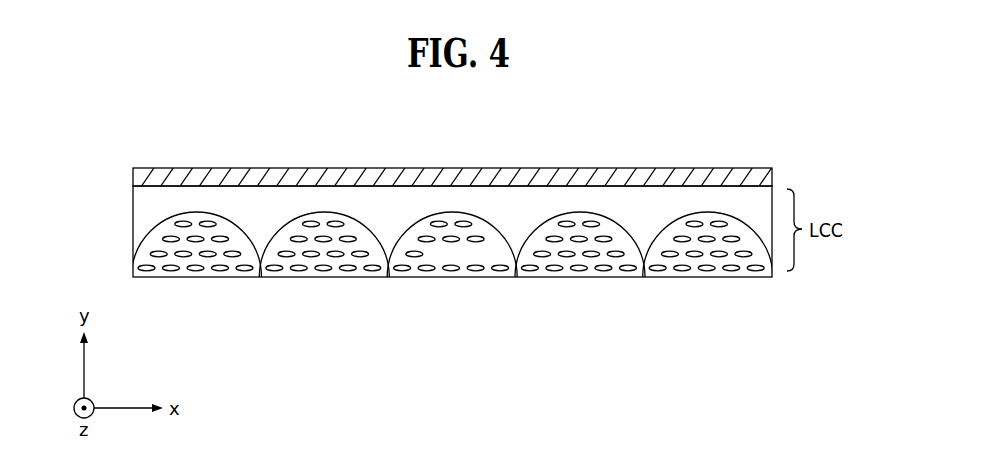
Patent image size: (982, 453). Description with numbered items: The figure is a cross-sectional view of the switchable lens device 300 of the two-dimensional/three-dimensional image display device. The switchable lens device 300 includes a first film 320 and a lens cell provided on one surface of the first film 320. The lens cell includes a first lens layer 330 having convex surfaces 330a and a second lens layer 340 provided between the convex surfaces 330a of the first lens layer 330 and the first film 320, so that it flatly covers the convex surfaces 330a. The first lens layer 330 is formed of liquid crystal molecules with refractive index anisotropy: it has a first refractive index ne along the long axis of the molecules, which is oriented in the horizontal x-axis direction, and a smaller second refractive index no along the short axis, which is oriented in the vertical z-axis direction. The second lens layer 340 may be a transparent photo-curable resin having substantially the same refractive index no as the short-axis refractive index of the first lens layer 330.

The switchable lens device 300 is at (193, 129).
The first film 320 is at (621, 175).
The first lens layer 330 is at (312, 260).
The convex surfaces 330a is at (408, 233).
The second lens layer 340 is at (392, 200).